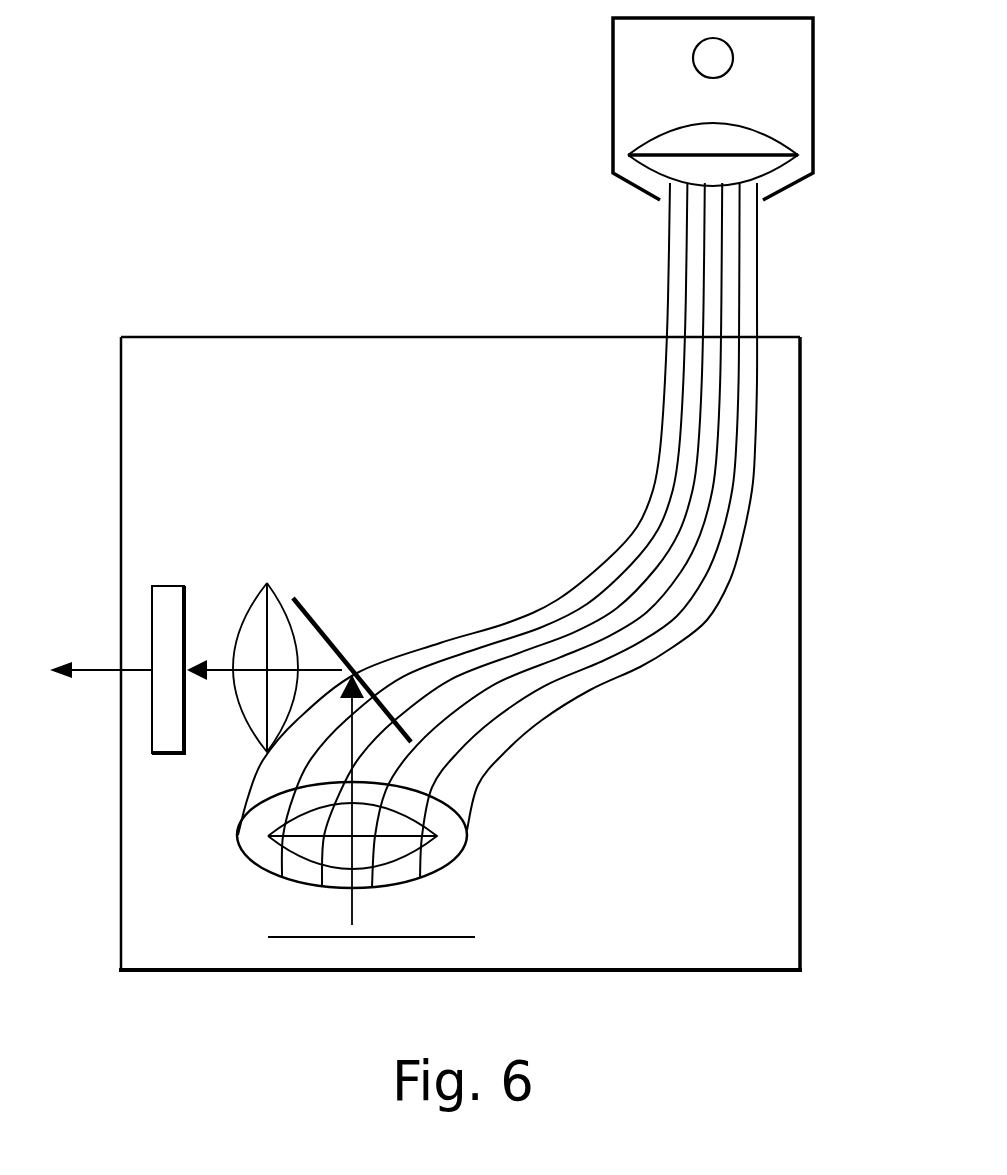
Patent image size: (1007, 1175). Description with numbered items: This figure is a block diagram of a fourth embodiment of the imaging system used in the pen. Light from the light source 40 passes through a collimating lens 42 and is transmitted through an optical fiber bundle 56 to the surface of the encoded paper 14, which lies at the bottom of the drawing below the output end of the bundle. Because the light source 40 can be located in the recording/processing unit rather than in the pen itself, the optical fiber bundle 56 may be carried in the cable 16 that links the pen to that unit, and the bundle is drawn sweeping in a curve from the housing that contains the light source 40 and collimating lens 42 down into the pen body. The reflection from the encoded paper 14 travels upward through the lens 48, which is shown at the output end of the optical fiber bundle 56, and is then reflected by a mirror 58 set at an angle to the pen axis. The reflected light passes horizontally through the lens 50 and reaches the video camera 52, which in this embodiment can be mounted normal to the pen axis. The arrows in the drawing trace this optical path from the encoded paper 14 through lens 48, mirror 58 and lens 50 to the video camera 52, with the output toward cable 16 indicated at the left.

The encoded paper 14 is at (452, 937).
The cable 16 is at (95, 668).
The light source 40 is at (698, 72).
The collimating lens 42 is at (760, 128).
The lens 48 is at (277, 843).
The lens 50 is at (280, 598).
The video camera 52 is at (166, 586).
The optical fiber bundle 56 is at (778, 294).
The mirror 58 is at (330, 632).